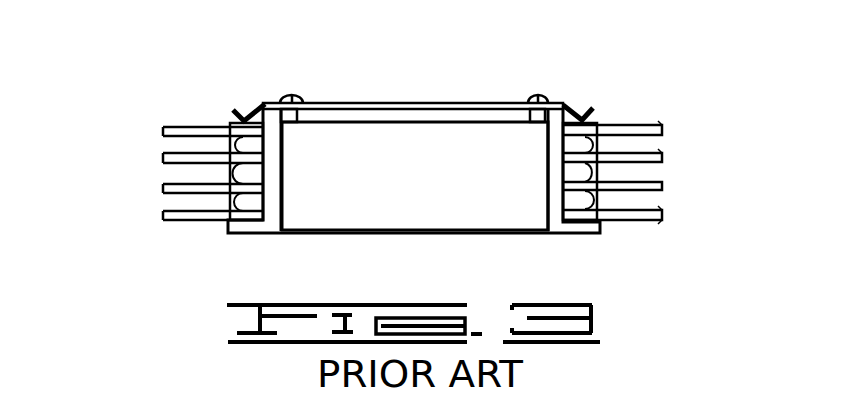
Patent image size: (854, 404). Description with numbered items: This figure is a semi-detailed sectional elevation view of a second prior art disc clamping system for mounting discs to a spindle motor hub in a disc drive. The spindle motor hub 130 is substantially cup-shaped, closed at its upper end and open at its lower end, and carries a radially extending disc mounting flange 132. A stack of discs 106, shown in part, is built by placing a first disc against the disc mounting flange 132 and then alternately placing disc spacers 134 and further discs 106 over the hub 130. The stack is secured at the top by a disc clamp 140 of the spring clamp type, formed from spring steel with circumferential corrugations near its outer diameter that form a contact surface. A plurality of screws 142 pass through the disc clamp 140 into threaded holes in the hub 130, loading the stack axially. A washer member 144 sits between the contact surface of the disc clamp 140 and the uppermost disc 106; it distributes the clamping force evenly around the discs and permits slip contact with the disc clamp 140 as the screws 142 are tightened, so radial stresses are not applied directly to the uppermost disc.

The discs 106 is at (660, 215).
The spindle motor hub 130 is at (370, 117).
The disc mounting flange 132 is at (580, 222).
The disc spacers 134 is at (250, 202).
The disc clamp 140 is at (263, 103).
The screws 142 is at (543, 98).
The washer member 144 is at (597, 121).